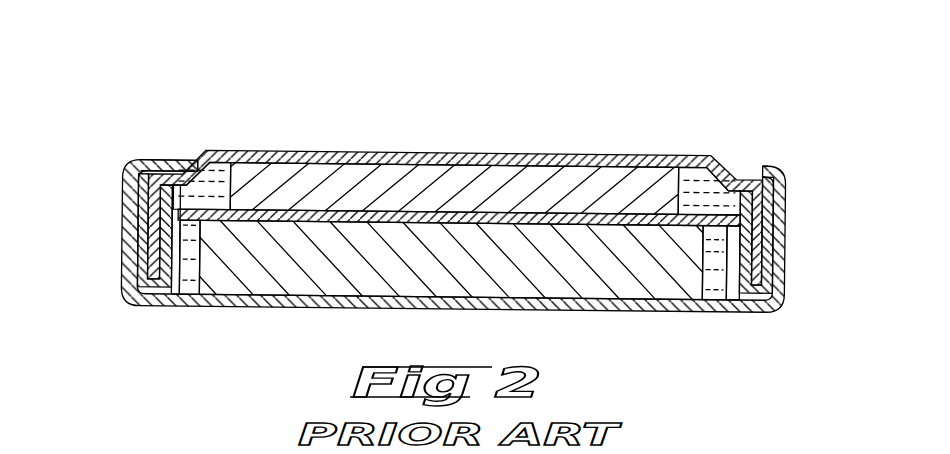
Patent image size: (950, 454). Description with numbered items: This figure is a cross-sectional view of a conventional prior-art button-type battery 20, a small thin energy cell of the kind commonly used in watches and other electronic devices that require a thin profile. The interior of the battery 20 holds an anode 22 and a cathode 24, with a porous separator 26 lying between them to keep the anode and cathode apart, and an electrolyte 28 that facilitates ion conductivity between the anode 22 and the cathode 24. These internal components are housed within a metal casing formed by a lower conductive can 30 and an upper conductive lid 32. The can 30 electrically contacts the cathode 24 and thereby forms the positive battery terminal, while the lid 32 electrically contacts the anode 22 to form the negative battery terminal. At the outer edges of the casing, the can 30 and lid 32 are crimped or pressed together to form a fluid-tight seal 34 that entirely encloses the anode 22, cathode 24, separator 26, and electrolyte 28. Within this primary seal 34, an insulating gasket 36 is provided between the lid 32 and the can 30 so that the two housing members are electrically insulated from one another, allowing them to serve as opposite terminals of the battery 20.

The button-type battery 20 is at (398, 94).
The anode 22 is at (433, 180).
The cathode 24 is at (597, 283).
The porous separator 26 is at (318, 168).
The electrolyte 28 is at (697, 185).
The lower conductive can 30 is at (717, 303).
The upper conductive lid 32 is at (537, 163).
The fluid-tight seal 34 is at (126, 161).
The insulating gasket 36 is at (142, 189).